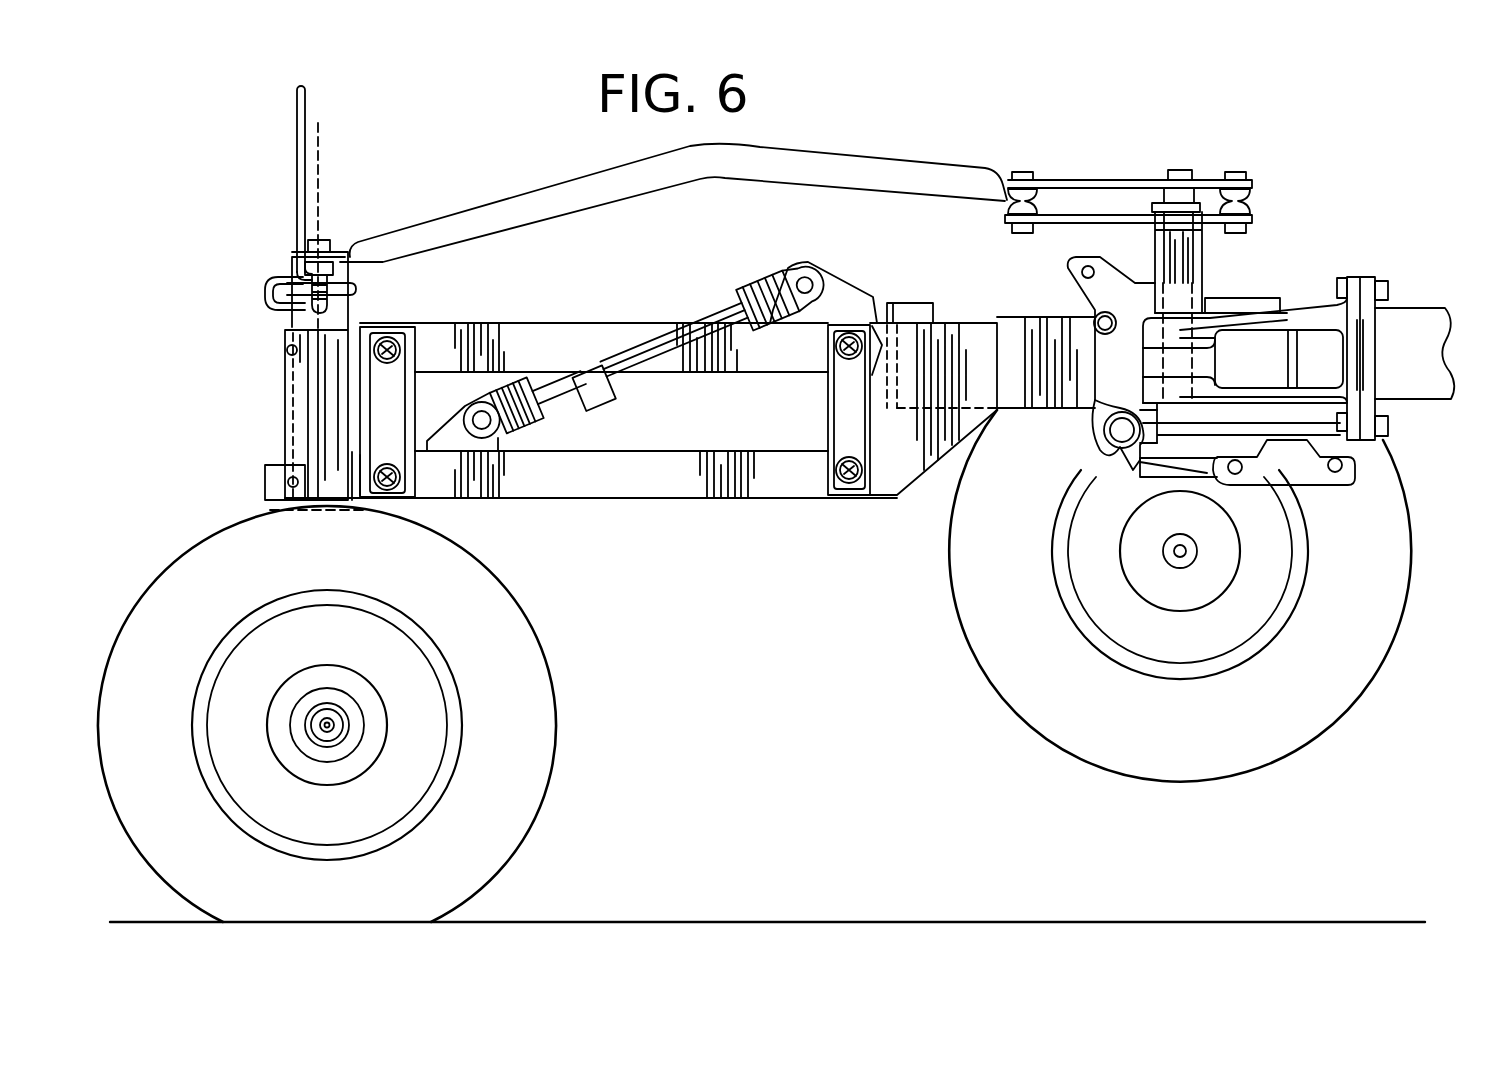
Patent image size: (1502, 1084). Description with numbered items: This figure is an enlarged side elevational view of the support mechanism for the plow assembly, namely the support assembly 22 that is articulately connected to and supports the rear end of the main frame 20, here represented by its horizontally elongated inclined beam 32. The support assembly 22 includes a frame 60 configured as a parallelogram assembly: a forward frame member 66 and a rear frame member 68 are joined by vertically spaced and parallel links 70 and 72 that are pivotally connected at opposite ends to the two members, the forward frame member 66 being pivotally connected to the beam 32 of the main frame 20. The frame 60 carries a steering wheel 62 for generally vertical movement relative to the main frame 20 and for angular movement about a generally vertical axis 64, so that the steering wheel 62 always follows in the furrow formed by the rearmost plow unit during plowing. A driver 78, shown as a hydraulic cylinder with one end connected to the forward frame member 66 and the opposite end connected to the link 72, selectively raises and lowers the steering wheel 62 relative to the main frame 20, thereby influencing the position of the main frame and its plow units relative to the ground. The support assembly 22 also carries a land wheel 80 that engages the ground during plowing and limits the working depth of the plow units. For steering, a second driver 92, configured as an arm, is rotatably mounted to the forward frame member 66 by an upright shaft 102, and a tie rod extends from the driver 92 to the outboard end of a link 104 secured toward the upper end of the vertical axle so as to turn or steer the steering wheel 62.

The main frame 20 is at (1412, 310).
The support assembly 22 is at (856, 510).
The beam 32 is at (1418, 360).
The frame 60 is at (978, 318).
The steering wheel 62 is at (548, 723).
The vertical axis 64 is at (318, 167).
The forward frame member 66 is at (1042, 310).
The rear frame member 68 is at (418, 388).
The link 70 is at (583, 333).
The link 72 is at (668, 485).
The driver 78 is at (685, 310).
The land wheel 80 is at (978, 598).
The second driver 92 is at (1006, 214).
The upright shaft 102 is at (1190, 268).
The link 104 is at (357, 287).